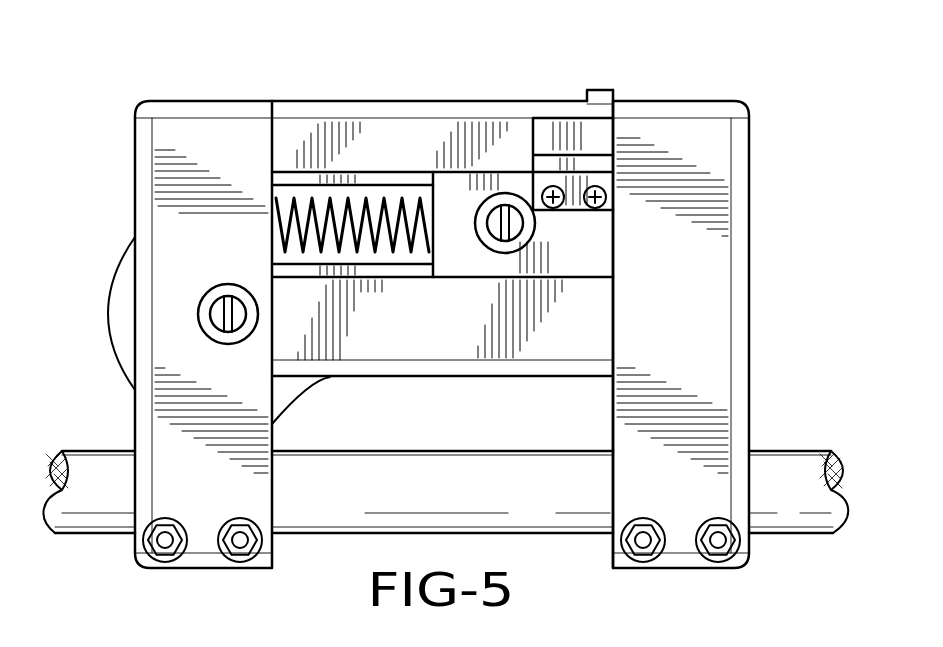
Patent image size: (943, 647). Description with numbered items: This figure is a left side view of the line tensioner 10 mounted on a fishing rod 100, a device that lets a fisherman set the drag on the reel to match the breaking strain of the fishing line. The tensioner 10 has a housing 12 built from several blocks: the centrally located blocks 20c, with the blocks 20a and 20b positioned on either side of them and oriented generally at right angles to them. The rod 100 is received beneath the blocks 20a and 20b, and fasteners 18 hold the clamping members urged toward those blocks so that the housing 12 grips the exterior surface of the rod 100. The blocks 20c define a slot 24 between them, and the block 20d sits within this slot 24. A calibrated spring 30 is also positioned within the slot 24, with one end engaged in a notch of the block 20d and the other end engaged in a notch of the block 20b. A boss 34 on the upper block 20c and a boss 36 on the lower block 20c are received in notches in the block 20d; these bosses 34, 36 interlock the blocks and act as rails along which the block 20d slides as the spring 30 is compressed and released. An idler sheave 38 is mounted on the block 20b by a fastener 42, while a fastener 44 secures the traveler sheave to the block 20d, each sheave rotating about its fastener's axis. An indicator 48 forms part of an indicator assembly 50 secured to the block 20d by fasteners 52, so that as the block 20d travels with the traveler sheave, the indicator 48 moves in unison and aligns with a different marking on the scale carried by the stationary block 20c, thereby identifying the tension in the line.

The line tensioner 10 is at (666, 74).
The housing 12 is at (449, 97).
The fasteners 18 is at (172, 548).
The block 20a is at (750, 191).
The block 20b is at (130, 190).
The blocks 20c is at (393, 101).
The block 20d is at (614, 252).
The slot 24 is at (320, 192).
The spring 30 is at (338, 268).
The boss 34 is at (402, 178).
The boss 36 is at (404, 272).
The idler sheave 38 is at (298, 396).
The fastener 42 is at (214, 313).
The fastener 44 is at (492, 230).
The indicator 48 is at (597, 90).
The indicator assembly 50 is at (547, 114).
The fasteners 52 is at (590, 209).
The fishing rod 100 is at (799, 446).